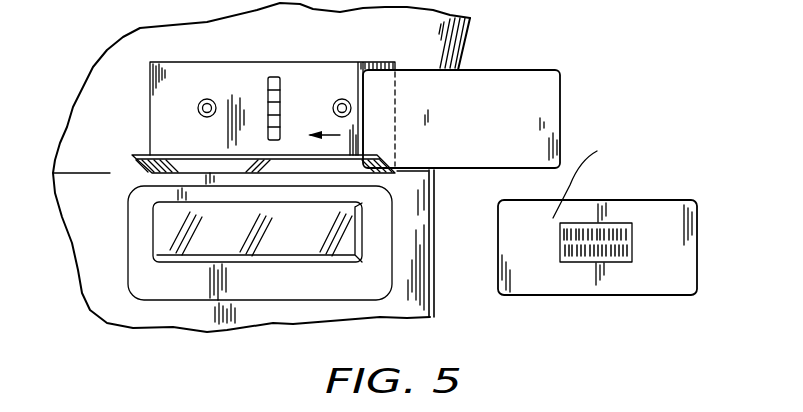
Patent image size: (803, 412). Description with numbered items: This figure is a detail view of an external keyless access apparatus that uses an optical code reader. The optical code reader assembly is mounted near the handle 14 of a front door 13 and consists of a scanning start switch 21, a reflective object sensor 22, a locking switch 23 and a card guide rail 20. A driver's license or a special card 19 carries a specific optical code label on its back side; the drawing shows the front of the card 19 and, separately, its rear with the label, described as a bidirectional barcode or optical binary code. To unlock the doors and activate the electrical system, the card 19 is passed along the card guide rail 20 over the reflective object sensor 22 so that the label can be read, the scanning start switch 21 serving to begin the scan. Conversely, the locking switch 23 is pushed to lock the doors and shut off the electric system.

The front door 13 is at (413, 285).
The handle 14 is at (134, 239).
The special card 19 is at (523, 82).
The card guide rail 20 is at (140, 156).
The scanning start switch 21 is at (345, 99).
The reflective object sensor 22 is at (268, 98).
The locking switch 23 is at (197, 108).